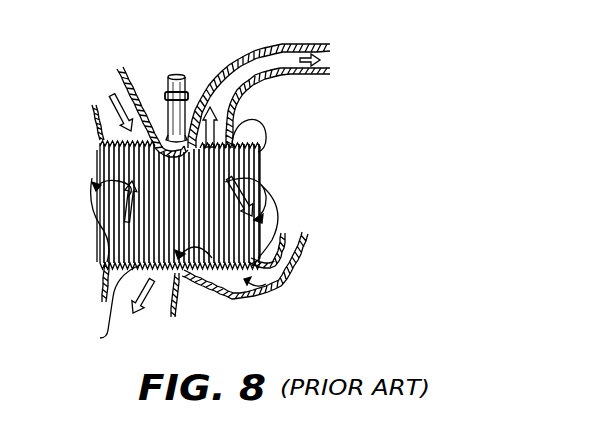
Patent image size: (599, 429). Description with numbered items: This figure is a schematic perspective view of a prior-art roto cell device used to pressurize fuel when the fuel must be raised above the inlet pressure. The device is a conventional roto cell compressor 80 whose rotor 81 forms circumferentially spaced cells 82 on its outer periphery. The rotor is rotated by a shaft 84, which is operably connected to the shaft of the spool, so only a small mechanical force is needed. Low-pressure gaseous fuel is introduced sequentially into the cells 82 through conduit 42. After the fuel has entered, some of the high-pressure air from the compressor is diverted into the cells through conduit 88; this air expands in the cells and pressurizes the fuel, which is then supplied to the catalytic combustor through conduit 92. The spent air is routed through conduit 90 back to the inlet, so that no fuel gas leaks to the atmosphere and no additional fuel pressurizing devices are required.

The roto cell compressor 80 is at (72, 169).
The rotor 81 is at (258, 144).
The cells 82 is at (100, 338).
The shaft 84 is at (167, 82).
The conduit 88 is at (262, 297).
The conduit 90 is at (104, 272).
The conduit 92 is at (290, 44).
The conduit 42 is at (91, 106).